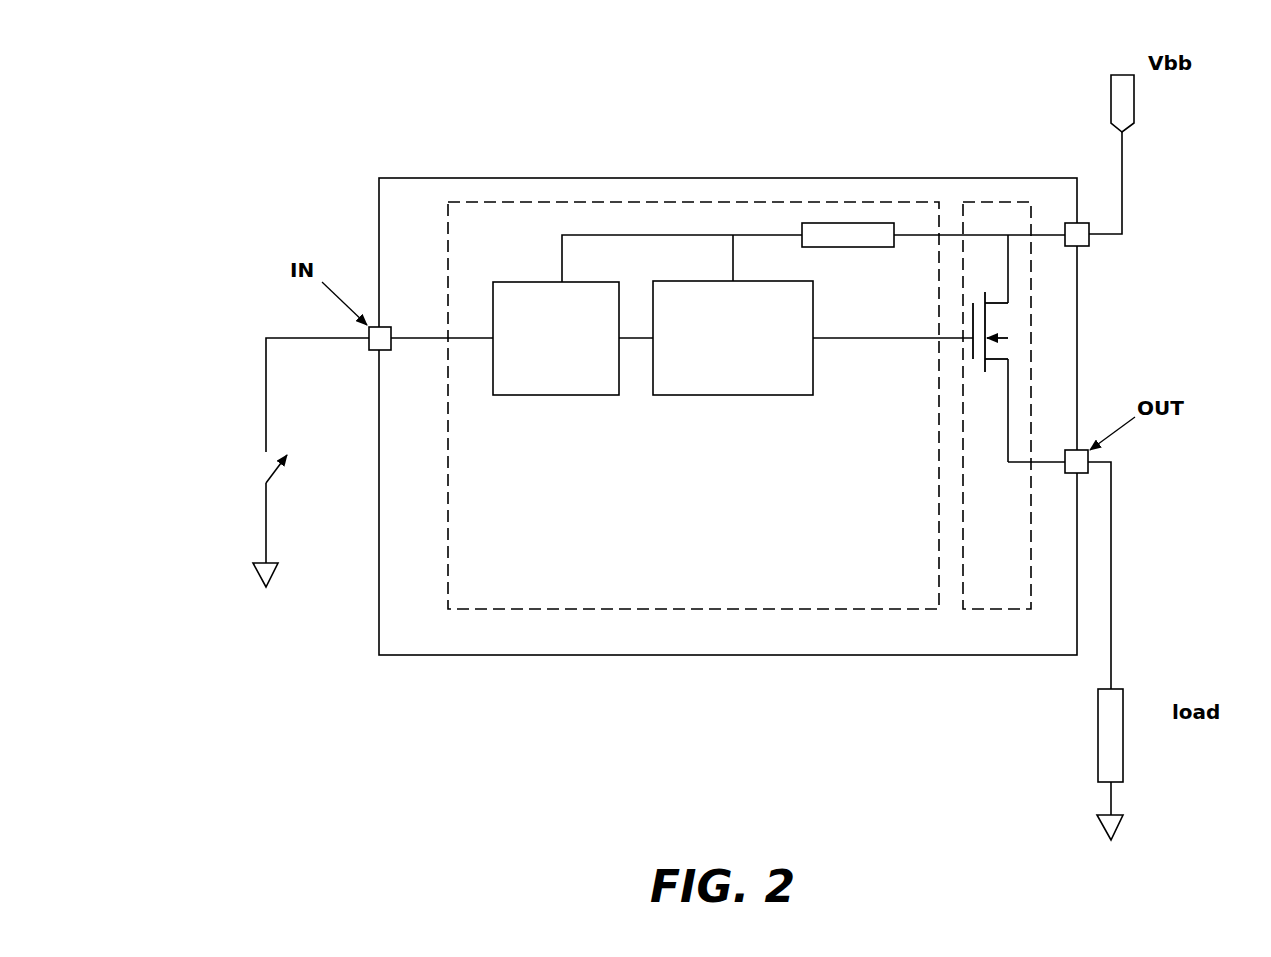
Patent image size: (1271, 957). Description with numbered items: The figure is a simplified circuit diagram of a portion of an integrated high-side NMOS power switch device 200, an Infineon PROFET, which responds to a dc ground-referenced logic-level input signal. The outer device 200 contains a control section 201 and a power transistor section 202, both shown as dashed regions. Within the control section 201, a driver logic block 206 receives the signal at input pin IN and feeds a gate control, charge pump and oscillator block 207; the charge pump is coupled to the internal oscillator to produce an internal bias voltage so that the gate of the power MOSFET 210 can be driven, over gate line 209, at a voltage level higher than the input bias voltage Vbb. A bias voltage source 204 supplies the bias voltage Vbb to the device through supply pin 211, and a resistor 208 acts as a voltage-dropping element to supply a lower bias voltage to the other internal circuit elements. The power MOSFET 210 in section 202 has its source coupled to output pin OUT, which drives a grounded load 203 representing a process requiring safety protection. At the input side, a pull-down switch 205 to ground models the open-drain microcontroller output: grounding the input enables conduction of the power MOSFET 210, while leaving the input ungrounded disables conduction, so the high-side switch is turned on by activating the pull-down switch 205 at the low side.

The smart power switch device 200 is at (722, 177).
The control circuitry block 201 is at (693, 405).
The power transistor block 202 is at (997, 405).
The load 203 is at (1123, 749).
The bias voltage source 204 is at (1137, 100).
The input switch 205 is at (253, 461).
The driver logic 206 is at (575, 395).
The gate control, charge pump and oscillator 207 is at (758, 395).
The resistor 208 is at (860, 223).
The gate drive line 209 is at (915, 340).
The power MOSFET 210 is at (1012, 325).
The supply pin 211 is at (1092, 247).